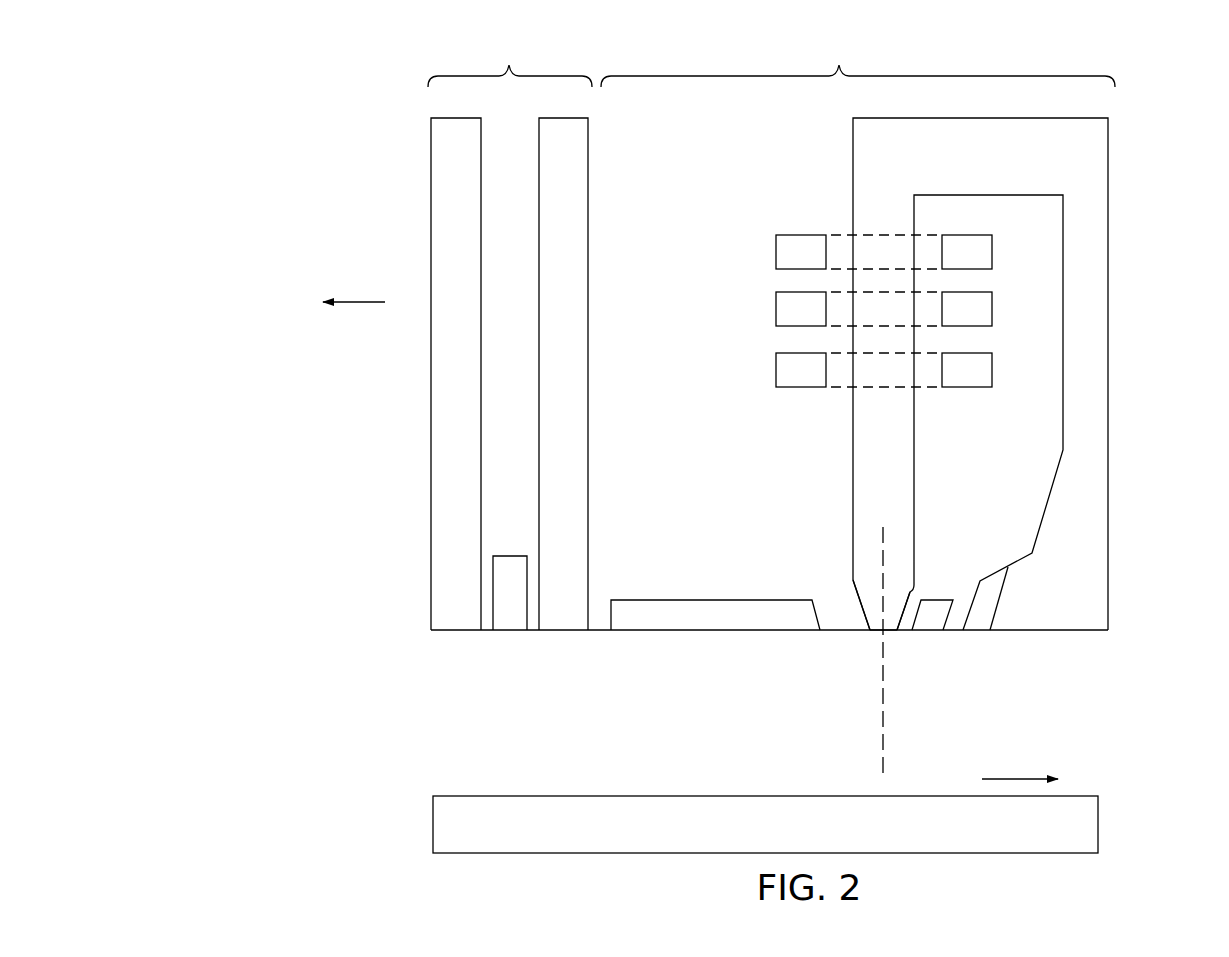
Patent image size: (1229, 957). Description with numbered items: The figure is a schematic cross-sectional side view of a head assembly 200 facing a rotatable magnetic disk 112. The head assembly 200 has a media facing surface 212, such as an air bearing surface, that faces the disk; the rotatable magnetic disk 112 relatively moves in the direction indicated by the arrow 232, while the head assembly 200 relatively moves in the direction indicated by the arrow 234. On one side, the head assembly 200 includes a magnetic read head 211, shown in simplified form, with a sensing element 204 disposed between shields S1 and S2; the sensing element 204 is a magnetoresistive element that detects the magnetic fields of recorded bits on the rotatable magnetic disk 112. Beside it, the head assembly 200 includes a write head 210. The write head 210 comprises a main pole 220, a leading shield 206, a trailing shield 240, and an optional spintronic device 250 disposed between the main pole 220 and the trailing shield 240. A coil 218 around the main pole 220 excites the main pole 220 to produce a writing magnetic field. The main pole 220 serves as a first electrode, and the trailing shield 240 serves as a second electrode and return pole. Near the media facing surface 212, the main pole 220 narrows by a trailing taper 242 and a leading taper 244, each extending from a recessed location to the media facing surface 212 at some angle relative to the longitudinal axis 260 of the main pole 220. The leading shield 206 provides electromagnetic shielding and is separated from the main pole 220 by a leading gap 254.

The head assembly 200 is at (300, 80).
The magnetic read head 211 is at (510, 55).
The write head 210 is at (858, 55).
The media facing surface 212 is at (1070, 632).
The shield S1 is at (450, 633).
The shield S2 is at (560, 633).
The sensing element 204 is at (508, 633).
The leading shield 206 is at (657, 637).
The trailing shield 240 is at (1093, 542).
The main pole 220 is at (898, 443).
The coil 218 is at (800, 387).
The spintronic device 250 is at (928, 625).
The leading taper 244 is at (855, 592).
The trailing taper 242 is at (928, 568).
The leading gap 254 is at (843, 623).
The longitudinal axis 260 is at (883, 748).
The arrow 232 is at (1008, 779).
The arrow 234 is at (367, 302).
The rotatable magnetic disk 112 is at (1098, 820).